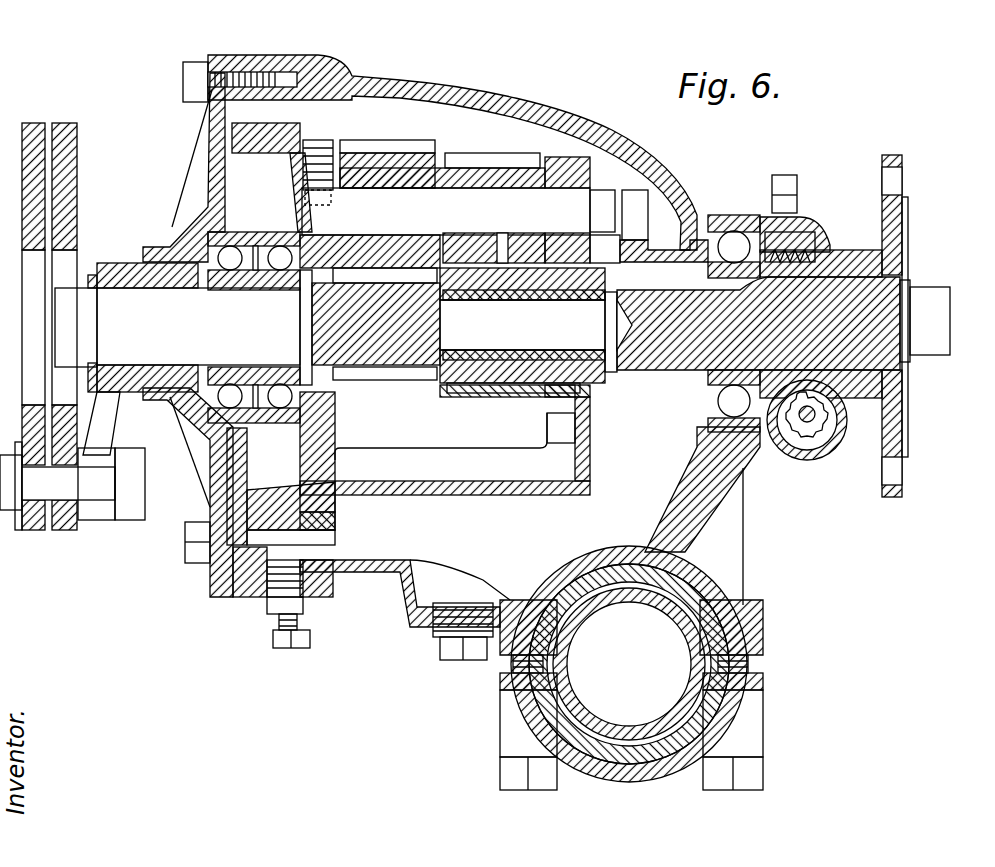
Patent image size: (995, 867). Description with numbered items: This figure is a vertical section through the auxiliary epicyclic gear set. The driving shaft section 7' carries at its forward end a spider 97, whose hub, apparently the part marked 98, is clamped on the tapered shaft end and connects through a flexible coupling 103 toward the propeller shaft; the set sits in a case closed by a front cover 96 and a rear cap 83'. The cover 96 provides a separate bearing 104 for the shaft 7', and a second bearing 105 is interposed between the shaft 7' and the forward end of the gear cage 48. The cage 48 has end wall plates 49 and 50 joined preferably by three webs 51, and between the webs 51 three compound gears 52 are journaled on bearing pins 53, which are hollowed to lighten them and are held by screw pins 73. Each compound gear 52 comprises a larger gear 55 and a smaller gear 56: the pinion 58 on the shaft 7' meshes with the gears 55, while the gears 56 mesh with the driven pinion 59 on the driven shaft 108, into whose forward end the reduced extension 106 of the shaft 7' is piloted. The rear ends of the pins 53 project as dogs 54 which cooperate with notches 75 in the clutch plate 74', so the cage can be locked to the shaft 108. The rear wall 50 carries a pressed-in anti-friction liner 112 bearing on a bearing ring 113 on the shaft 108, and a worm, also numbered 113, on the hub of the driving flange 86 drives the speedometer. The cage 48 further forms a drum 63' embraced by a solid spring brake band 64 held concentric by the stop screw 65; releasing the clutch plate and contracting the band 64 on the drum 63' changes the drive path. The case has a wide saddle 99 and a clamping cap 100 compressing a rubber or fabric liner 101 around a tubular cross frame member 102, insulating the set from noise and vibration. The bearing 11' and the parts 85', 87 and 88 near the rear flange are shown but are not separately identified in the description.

The driving shaft section 7' is at (477, 339).
The ball bearing 11' is at (707, 312).
The cage member 48 is at (478, 493).
The end wall plate 49 is at (330, 456).
The rear end wall plate 50 is at (580, 438).
The webs 51 is at (440, 460).
The compound gears 52 is at (440, 146).
The bearing pins 53 is at (500, 195).
The clutch dogs 54 is at (598, 193).
The gear 55 is at (388, 153).
The gear 56 is at (488, 158).
The pinion 58 is at (388, 381).
The driven pinion 59 is at (470, 393).
The drum member 63' is at (337, 456).
The brake band 64 is at (330, 532).
The stop screw 65 is at (272, 640).
The screw pins 73 is at (315, 144).
The clutch plate 74' is at (664, 237).
The notches 75 is at (633, 198).
The rear cap 83' is at (798, 226).
The end plate 85' is at (821, 306).
The driving flange 86 is at (905, 236).
The shaft end 87 is at (935, 300).
The gear 88 is at (827, 447).
The front cover 96 is at (209, 185).
The spider 97 is at (100, 440).
The hub 98 is at (104, 266).
The saddle 99 is at (735, 607).
The clamping cap 100 is at (637, 777).
The liner 101 is at (700, 637).
The cross frame member 102 is at (627, 607).
The flexible coupling 103 is at (27, 128).
The bearing 104 is at (229, 264).
The second bearing 105 is at (281, 265).
The reduced extension 106 is at (497, 328).
The driven shaft 108 is at (905, 288).
The liner 112 is at (548, 402).
The bearing ring 113 is at (702, 247).